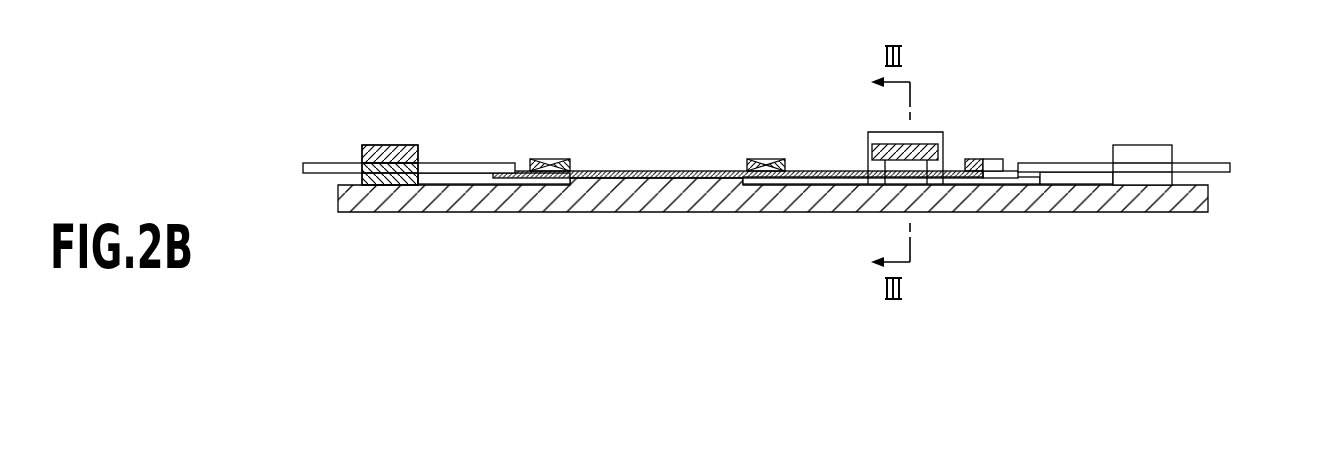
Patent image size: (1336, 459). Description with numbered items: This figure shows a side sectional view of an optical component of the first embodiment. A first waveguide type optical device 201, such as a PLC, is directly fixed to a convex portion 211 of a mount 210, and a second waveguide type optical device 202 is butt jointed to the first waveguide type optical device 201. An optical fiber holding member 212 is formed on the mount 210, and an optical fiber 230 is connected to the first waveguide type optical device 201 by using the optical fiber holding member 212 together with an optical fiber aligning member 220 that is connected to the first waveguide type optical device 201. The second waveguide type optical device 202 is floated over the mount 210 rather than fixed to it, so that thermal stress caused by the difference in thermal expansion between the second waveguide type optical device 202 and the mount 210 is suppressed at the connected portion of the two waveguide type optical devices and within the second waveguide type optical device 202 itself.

The first waveguide type optical device 201 is at (637, 170).
The second waveguide type optical device 202 is at (800, 170).
The mount 210 is at (1090, 205).
The convex portion 211 is at (664, 182).
The optical fiber holding member 212 is at (390, 178).
The optical fiber aligning member 220 is at (538, 181).
The optical fiber 230 is at (463, 152).